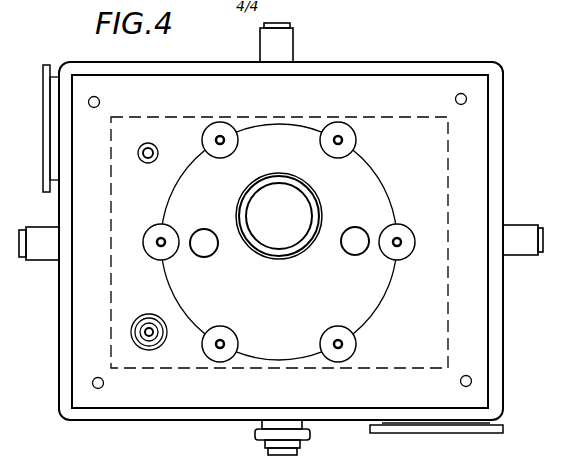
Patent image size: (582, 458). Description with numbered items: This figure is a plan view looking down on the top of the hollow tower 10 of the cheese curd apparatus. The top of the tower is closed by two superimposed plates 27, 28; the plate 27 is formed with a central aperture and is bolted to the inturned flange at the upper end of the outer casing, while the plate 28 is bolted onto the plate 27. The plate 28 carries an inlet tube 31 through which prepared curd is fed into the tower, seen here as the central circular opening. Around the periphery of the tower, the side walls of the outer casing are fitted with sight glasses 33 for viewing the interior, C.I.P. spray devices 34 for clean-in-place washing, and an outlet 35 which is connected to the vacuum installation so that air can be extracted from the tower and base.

The hollow tower 10 is at (415, 61).
The plate 27 is at (475, 133).
The plate 28 is at (373, 202).
The inlet tube 31 is at (307, 185).
The sight glasses 33 is at (47, 108).
The C.I.P. spray devices 34 is at (294, 43).
The outlet 35 is at (263, 433).